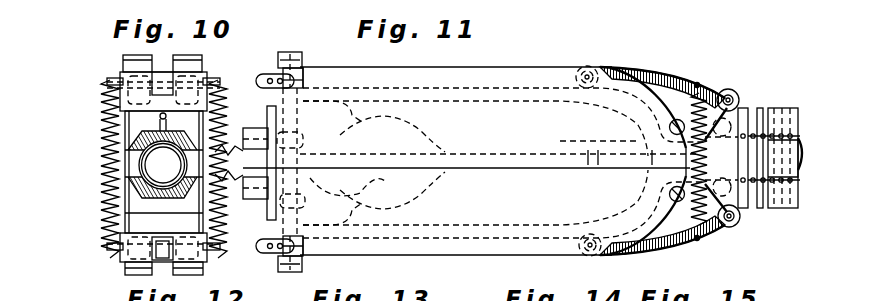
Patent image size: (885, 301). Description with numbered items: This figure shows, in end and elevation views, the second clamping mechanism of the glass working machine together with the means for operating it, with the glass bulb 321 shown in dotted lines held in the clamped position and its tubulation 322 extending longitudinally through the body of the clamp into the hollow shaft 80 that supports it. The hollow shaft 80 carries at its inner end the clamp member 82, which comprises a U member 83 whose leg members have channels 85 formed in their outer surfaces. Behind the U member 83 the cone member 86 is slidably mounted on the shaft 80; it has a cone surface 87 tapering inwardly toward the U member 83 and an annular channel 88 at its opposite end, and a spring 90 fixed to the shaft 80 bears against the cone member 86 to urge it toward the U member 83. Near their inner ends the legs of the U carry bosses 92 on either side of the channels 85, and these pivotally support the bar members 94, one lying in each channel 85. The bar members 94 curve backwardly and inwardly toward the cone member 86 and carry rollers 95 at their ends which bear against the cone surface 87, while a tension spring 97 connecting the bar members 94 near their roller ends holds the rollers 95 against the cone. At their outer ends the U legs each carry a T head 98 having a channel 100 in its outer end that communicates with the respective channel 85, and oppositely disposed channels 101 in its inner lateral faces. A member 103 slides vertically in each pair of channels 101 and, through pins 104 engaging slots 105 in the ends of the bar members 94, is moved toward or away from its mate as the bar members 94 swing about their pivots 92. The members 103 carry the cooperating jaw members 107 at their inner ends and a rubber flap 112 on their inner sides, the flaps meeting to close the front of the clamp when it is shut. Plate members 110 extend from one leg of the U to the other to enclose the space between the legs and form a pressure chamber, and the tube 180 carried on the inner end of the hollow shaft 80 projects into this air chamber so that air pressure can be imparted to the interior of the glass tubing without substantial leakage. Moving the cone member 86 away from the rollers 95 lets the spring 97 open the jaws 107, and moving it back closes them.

In FIG. 11, the hollow shaft 80 is at (758, 196).
In FIG. 10, the clamp member 82 is at (141, 144).
In FIG. 11, the clamp member 82 is at (502, 161).
In FIG. 11, the U member 83 is at (548, 228).
In FIG. 11, the channels 85 is at (438, 92).
In FIG. 11, the cone member 86 is at (747, 108).
In FIG. 11, the cone surface 87 is at (720, 118).
In FIG. 11, the annular channel 88 is at (756, 206).
In FIG. 11, the spring 90 is at (786, 133).
In FIG. 11, the bosses 92 is at (588, 65).
In FIG. 11, the bar members 94 is at (651, 67).
In FIG. 11, the rollers 95 is at (737, 91).
In FIG. 10, the tension spring 97 is at (110, 156).
In FIG. 11, the tension spring 97 is at (696, 83).
In FIG. 10, the T head 98 is at (140, 273).
In FIG. 11, the T head 98 is at (298, 56).
In FIG. 11, the channel 100 is at (273, 56).
In FIG. 11, the channels 101 is at (289, 54).
In FIG. 10, the member 103 is at (113, 247).
In FIG. 11, the member 103 is at (302, 62).
In FIG. 11, the pins 104 is at (272, 76).
In FIG. 11, the slots 105 is at (262, 78).
In FIG. 10, the jaw members 107 is at (137, 123).
In FIG. 11, the jaw members 107 is at (258, 132).
In FIG. 10, the plate members 110 is at (108, 170).
In FIG. 11, the plate members 110 is at (217, 233).
In FIG. 10, the rubber flap 112 is at (130, 172).
In FIG. 11, the rubber flap 112 is at (300, 172).
In FIG. 11, the tube 180 is at (622, 154).
In FIG. 11, the bulb 321 is at (375, 174).
In FIG. 11, the tubulation 322 is at (420, 135).